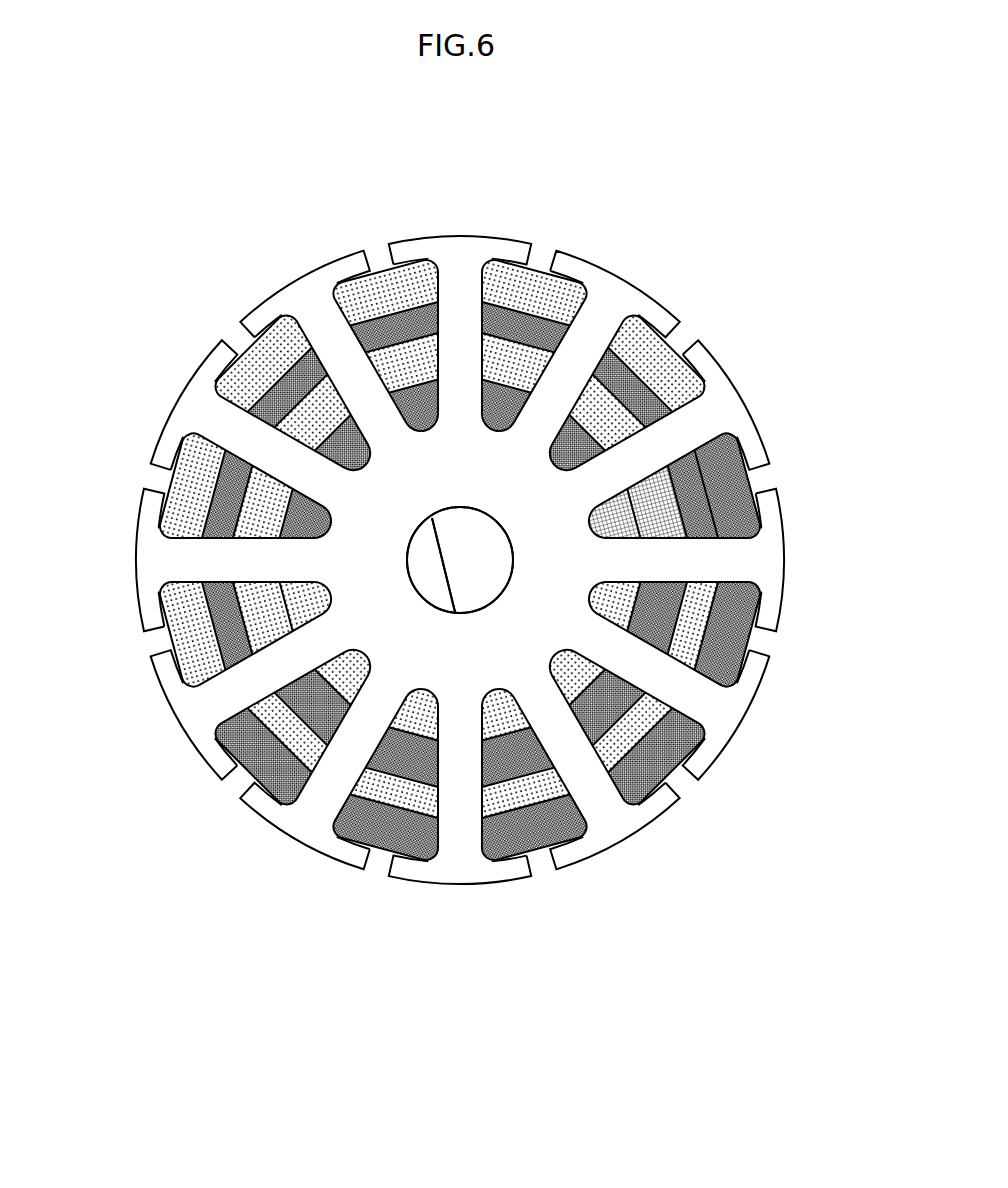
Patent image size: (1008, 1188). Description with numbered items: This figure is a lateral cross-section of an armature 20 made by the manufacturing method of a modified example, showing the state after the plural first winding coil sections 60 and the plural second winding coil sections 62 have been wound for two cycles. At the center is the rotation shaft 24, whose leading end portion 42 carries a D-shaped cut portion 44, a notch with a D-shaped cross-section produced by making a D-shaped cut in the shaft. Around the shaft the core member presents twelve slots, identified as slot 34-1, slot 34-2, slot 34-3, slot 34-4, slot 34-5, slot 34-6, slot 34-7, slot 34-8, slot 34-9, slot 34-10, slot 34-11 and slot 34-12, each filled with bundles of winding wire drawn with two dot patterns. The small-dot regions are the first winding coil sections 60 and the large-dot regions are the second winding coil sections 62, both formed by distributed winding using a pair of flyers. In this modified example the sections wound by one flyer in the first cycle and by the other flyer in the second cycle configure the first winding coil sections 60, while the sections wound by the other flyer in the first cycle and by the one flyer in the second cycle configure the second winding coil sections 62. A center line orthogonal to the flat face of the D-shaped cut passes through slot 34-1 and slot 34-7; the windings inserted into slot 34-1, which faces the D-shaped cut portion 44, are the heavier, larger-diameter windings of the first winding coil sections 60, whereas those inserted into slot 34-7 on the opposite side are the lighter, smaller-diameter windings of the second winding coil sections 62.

The armature 20 is at (462, 168).
The rotation shaft 24 is at (513, 560).
The leading end portion 42 is at (460, 560).
The D-shaped cut portion 44 is at (423, 585).
The slot 34-1 is at (160, 640).
The slot 34-2 is at (150, 492).
The slot 34-3 is at (245, 345).
The slot 34-4 is at (378, 245).
The slot 34-5 is at (540, 245).
The slot 34-6 is at (680, 345).
The slot 34-7 is at (767, 483).
The slot 34-8 is at (758, 645).
The slot 34-9 is at (677, 778).
The slot 34-10 is at (542, 862).
The slot 34-11 is at (382, 867).
The slot 34-12 is at (233, 783).
The first winding coil sections 60 is at (445, 347).
The second winding coil sections 62 is at (345, 468).